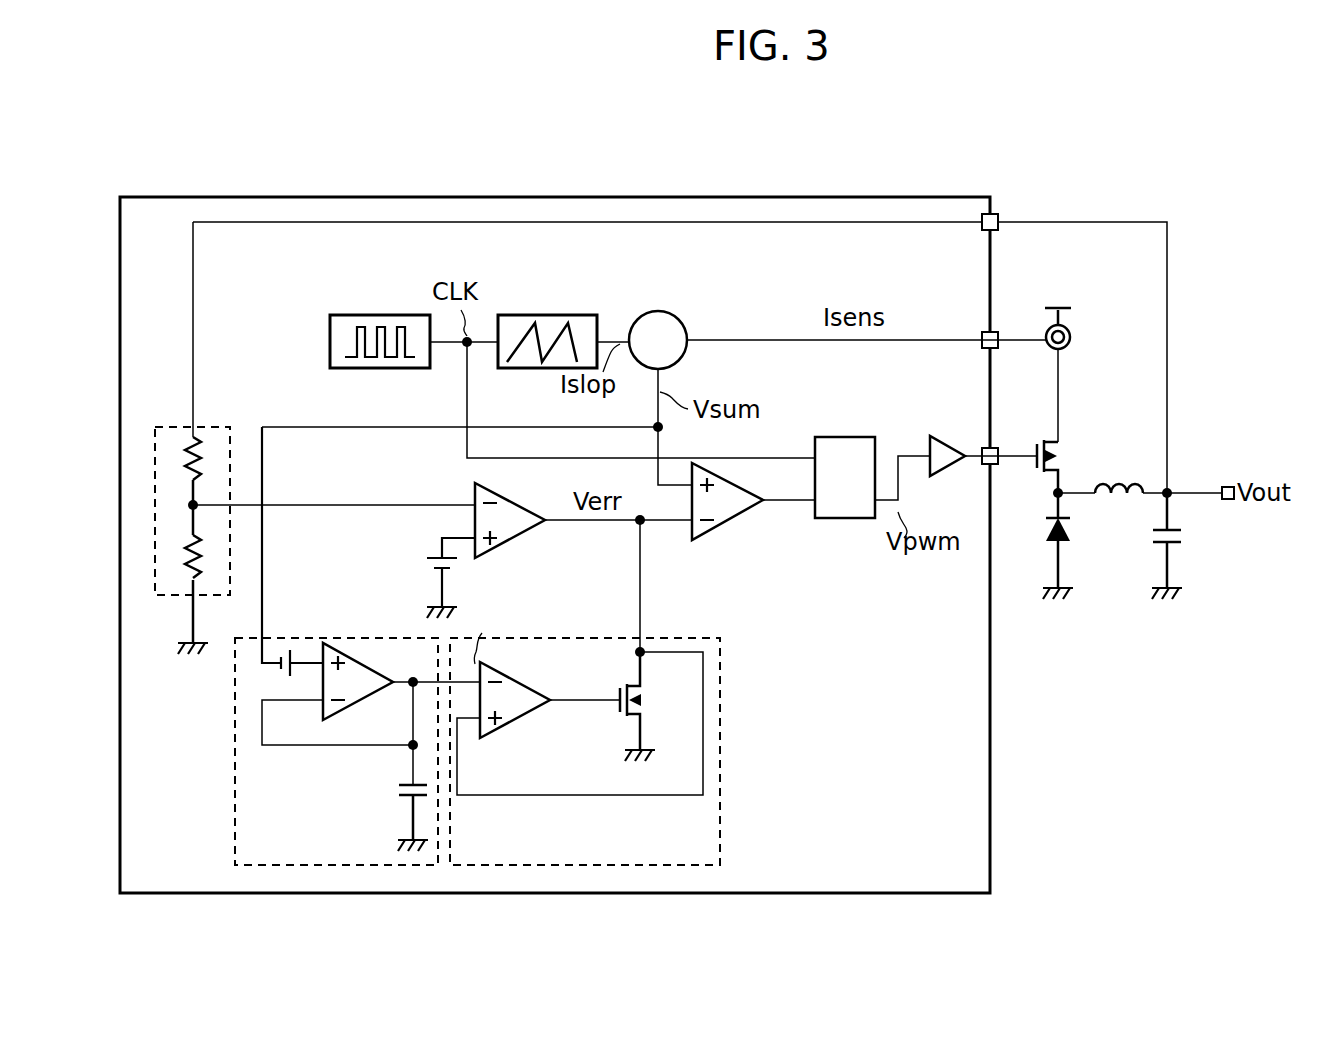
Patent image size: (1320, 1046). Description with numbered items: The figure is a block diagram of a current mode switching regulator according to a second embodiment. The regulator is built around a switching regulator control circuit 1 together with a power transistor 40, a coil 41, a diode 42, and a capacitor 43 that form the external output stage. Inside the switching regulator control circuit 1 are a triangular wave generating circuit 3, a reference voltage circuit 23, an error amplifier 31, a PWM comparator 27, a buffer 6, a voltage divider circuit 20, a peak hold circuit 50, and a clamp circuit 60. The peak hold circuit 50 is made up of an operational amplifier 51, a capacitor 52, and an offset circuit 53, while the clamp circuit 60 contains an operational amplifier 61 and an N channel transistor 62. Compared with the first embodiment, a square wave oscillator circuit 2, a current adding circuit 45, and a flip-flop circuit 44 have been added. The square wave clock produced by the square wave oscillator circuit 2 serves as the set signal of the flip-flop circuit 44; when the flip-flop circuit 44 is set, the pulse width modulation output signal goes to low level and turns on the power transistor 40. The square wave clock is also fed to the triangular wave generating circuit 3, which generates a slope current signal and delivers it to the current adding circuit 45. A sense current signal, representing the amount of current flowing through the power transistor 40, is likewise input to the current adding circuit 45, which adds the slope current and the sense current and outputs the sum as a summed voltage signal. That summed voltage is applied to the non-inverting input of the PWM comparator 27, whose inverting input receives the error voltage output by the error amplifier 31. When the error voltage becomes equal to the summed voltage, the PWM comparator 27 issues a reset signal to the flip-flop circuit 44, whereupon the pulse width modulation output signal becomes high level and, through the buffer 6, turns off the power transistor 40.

The switching regulator control circuit 1 is at (545, 197).
The square wave oscillator circuit 2 is at (330, 341).
The triangular wave generating circuit 3 is at (548, 315).
The buffer 6 is at (945, 438).
The voltage divider circuit 20 is at (213, 428).
The reference voltage circuit 23 is at (426, 564).
The PWM comparator 27 is at (718, 540).
The error amplifier 31 is at (537, 541).
The power transistor 40 is at (1057, 448).
The coil 41 is at (1124, 486).
The diode 42 is at (1064, 534).
The capacitor 43 is at (1183, 537).
The flip-flop circuit 44 is at (837, 437).
The current adding circuit 45 is at (659, 311).
The peak hold circuit 50 is at (329, 646).
The operational amplifier 51 is at (360, 712).
The capacitor 52 is at (405, 793).
The offset circuit 53 is at (292, 643).
The clamp circuit 60 is at (617, 731).
The operational amplifier 61 is at (525, 737).
The N channel transistor 62 is at (643, 717).